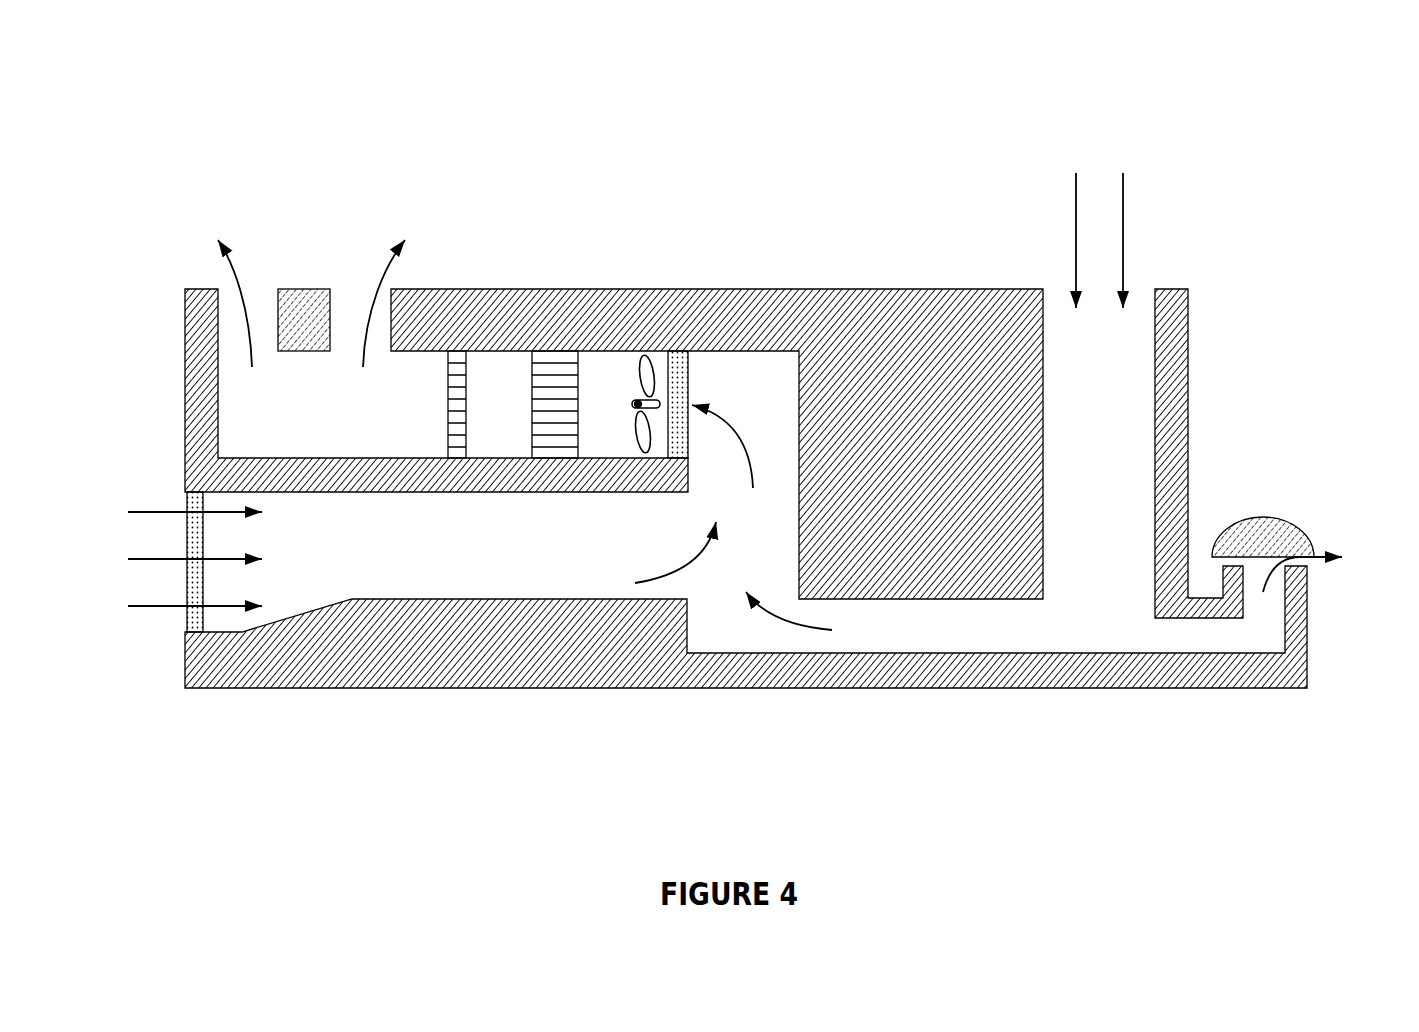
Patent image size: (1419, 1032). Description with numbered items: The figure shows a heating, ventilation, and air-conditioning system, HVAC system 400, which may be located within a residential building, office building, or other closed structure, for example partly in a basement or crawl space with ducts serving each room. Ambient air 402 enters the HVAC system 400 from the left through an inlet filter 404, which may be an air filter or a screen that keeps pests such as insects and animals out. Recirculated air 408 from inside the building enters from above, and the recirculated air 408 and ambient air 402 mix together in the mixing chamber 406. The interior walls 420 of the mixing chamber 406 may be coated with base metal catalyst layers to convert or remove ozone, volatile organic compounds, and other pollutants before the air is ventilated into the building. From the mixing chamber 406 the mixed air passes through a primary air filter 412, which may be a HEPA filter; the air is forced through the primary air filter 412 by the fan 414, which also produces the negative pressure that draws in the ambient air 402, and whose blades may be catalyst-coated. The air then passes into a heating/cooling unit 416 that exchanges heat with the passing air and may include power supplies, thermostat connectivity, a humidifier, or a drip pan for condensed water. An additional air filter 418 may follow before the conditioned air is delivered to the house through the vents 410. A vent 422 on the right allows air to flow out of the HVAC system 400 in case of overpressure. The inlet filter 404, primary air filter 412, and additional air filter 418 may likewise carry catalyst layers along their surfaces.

The HVAC system 400 is at (712, 60).
The ambient air 402 is at (162, 512).
The inlet filter 404 is at (195, 615).
The mixing chamber 406 is at (748, 528).
The recirculated air 408 is at (1123, 239).
The vents 410 is at (352, 305).
The primary air filter 412 is at (680, 377).
The fan 414 is at (648, 357).
The heating/cooling unit 416 is at (554, 385).
The additional air filter 418 is at (456, 385).
The interior walls 420 is at (800, 422).
The vent 422 is at (1318, 557).